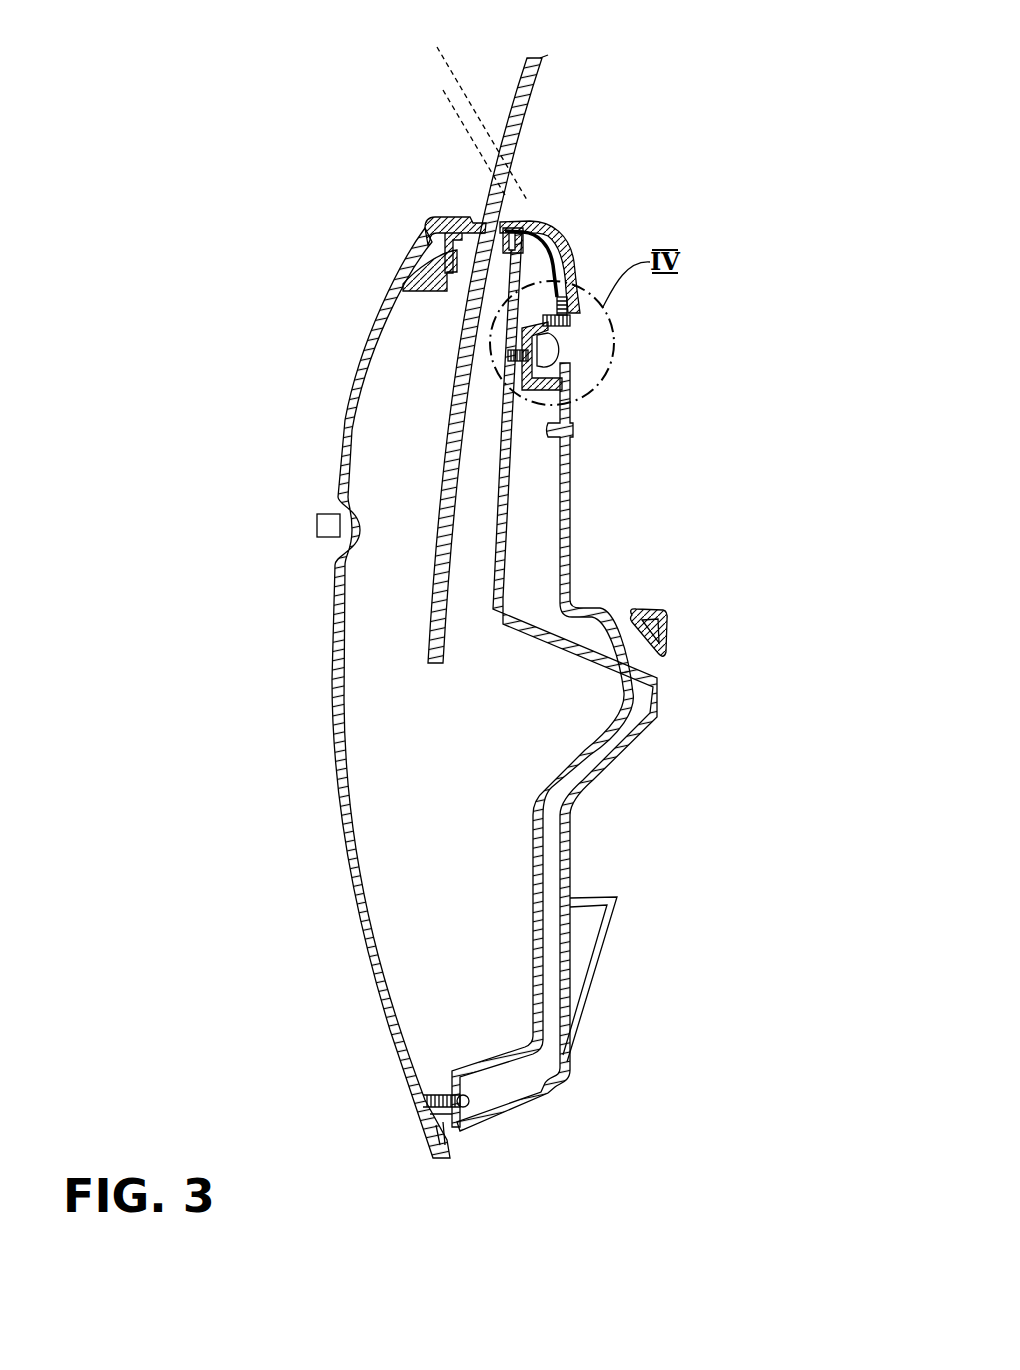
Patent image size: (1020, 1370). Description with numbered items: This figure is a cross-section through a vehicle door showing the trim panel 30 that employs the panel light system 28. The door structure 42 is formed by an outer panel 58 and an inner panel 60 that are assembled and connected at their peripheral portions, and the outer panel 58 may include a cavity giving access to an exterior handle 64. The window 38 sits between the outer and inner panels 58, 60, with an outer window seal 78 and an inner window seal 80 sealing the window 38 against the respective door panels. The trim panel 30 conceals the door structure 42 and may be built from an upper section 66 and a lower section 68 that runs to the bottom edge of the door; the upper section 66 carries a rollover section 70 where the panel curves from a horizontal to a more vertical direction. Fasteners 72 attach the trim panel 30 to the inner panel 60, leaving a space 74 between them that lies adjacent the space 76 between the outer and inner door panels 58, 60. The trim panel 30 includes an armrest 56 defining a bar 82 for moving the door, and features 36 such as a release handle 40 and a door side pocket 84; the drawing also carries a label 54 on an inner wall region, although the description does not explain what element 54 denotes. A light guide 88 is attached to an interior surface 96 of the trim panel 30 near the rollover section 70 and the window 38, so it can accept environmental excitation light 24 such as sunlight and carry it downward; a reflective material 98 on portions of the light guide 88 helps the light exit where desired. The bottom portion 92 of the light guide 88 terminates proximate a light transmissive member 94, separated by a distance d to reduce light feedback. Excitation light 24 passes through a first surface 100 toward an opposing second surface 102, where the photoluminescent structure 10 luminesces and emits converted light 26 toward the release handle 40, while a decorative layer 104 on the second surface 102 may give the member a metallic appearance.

The photoluminescent structure 10 is at (600, 312).
The excitation light 24 is at (457, 118).
The converted light 26 is at (575, 343).
The panel light system 28 is at (605, 180).
The trim panel 30 is at (567, 480).
The feature 36 is at (666, 688).
The window 38 is at (540, 70).
The release handle 40 is at (537, 213).
The door structure 42 is at (384, 991).
The inner skin 54 is at (502, 375).
The armrest 56 is at (667, 643).
The outer panel 58 is at (360, 908).
The inner panel 60 is at (540, 940).
The exterior handle 64 is at (324, 520).
The upper section 66 is at (576, 280).
The lower section 68 is at (578, 802).
The rollover section 70 is at (562, 222).
The fasteners 72 is at (506, 352).
The space 74 is at (532, 583).
The space 76 is at (425, 732).
The outer window seal 78 is at (481, 216).
The inner window seal 80 is at (510, 200).
The bar 82 is at (646, 627).
The door side pocket 84 is at (597, 1000).
The light guide 88 is at (521, 192).
The bottom portion 92 is at (580, 302).
The light transmissive member 94 is at (568, 357).
The interior surface 96 is at (443, 243).
The reflective material 98 is at (580, 255).
The first surface 100 is at (517, 290).
The second surface 102 is at (520, 330).
The decorative layer 104 is at (572, 322).
The distance d is at (440, 252).